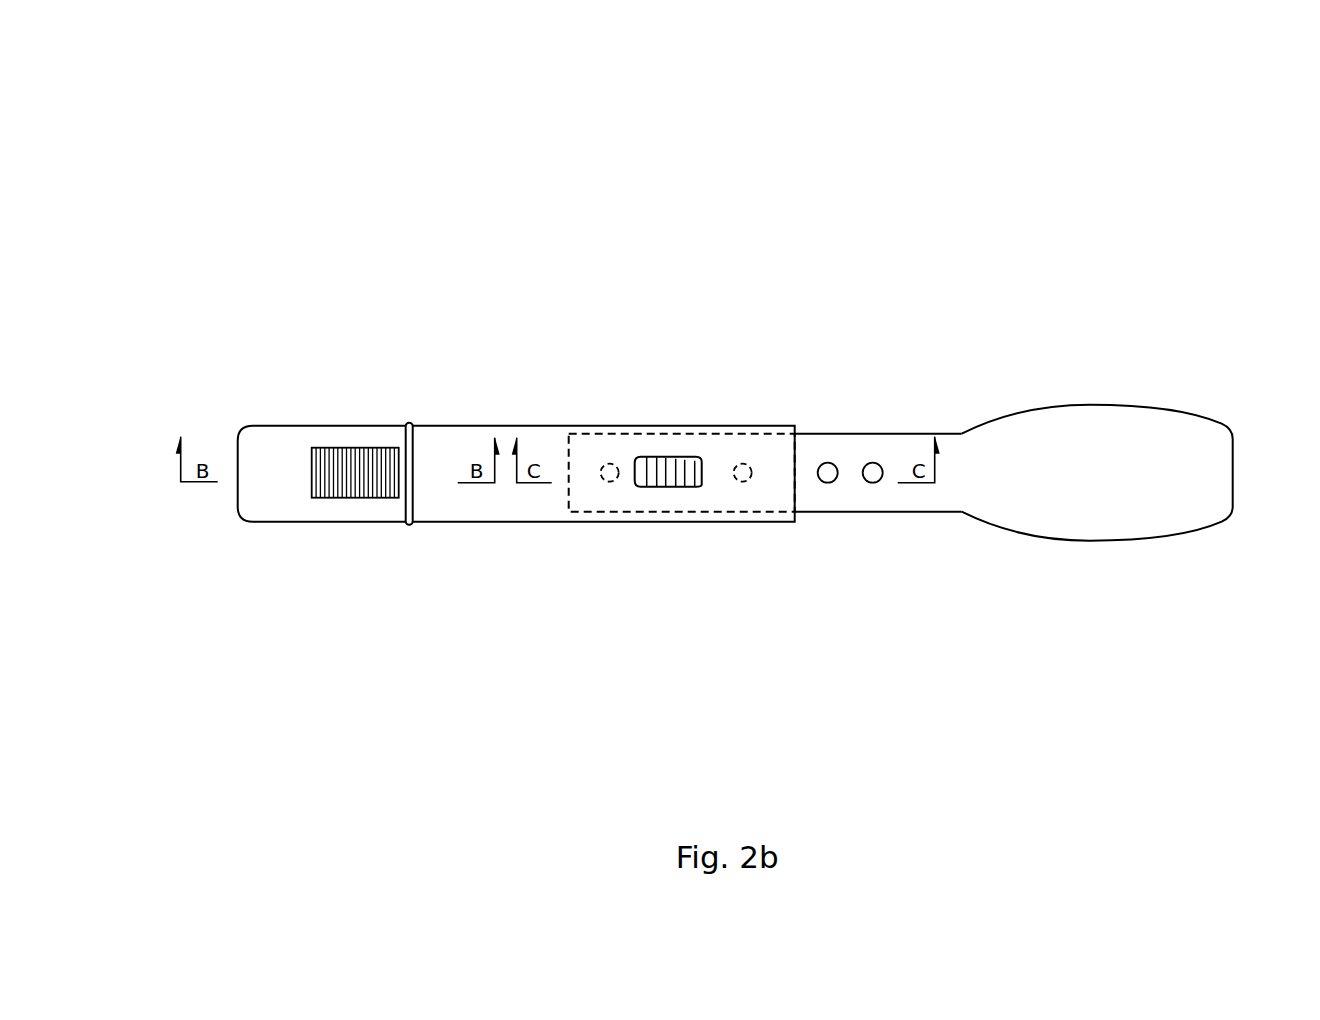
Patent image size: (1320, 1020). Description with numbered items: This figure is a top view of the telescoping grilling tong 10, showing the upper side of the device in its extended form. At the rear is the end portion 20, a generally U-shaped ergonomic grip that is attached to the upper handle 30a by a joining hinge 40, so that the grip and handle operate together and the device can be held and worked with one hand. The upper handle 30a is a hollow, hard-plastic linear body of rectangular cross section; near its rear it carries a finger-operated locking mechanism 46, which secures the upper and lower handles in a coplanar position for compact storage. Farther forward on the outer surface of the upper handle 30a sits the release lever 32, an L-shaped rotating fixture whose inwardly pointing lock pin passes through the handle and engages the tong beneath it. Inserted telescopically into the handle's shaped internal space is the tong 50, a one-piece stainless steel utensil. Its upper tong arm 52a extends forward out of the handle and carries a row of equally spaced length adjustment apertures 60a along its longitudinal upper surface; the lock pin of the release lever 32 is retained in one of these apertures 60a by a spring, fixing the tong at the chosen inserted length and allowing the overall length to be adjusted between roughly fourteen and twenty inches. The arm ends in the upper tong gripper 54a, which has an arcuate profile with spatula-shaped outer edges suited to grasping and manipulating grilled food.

The telescoping grilling tong 10 is at (226, 136).
The end portion 20 is at (267, 423).
The finger-operated locking mechanism 46 is at (352, 448).
The joining hinge 40 is at (408, 498).
The upper handle 30a is at (440, 438).
The upper tong arm 52a is at (603, 512).
The upper length adjustment apertures 60a is at (737, 468).
The release lever 32 is at (675, 488).
The tong 50 is at (1014, 477).
The upper tong gripper 54a is at (1057, 437).